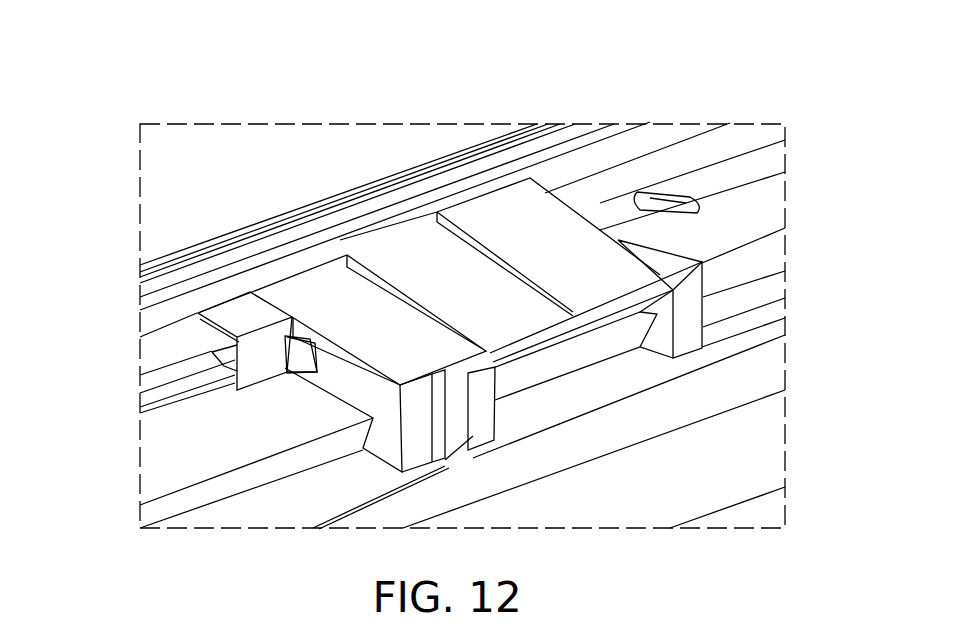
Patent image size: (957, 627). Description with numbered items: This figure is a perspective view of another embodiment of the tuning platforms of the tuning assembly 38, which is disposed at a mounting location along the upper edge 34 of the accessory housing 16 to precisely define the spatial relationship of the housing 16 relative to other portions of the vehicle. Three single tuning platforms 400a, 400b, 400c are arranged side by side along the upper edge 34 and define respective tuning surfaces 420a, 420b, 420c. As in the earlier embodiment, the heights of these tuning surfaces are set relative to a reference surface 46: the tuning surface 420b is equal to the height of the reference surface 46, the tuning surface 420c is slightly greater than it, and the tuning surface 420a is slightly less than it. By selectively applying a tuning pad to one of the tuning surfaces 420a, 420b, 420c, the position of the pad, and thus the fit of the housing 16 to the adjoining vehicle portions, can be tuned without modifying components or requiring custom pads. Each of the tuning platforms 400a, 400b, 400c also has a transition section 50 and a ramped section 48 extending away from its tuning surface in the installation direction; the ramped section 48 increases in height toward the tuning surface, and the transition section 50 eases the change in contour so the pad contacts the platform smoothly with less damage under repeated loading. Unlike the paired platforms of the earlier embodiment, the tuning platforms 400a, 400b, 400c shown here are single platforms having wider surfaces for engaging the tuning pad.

The housing 16 is at (168, 165).
The upper edge 34 is at (247, 228).
The tuning assembly 38 is at (651, 141).
The reference surface 46 is at (224, 306).
The ramped section 48 is at (503, 312).
The transition section 50 is at (363, 327).
The tuning platform 400a is at (364, 322).
The tuning platform 400b is at (388, 164).
The tuning platform 400c is at (548, 193).
The tuning surface 420a is at (323, 297).
The tuning surface 420b is at (412, 250).
The tuning surface 420c is at (508, 203).